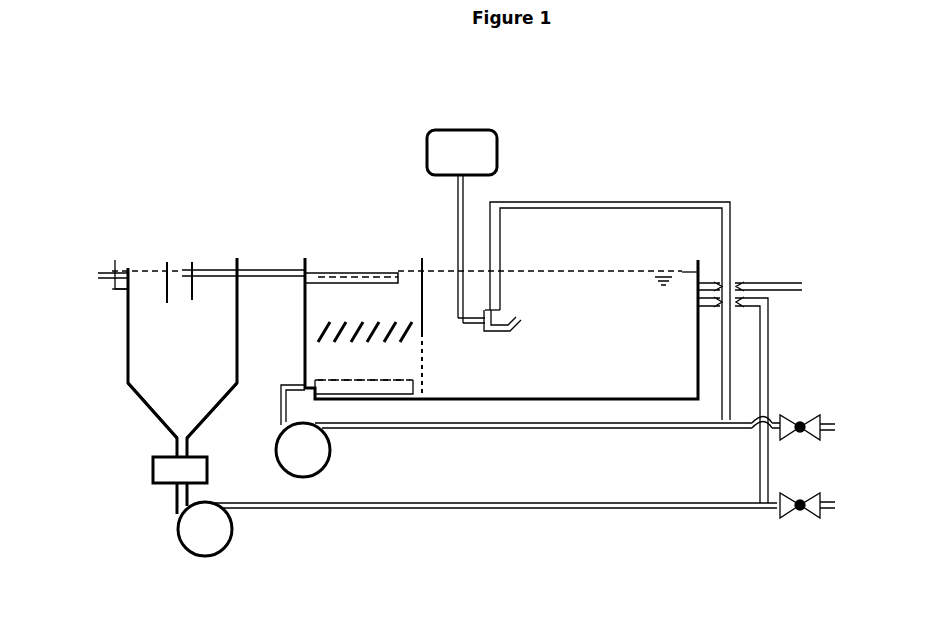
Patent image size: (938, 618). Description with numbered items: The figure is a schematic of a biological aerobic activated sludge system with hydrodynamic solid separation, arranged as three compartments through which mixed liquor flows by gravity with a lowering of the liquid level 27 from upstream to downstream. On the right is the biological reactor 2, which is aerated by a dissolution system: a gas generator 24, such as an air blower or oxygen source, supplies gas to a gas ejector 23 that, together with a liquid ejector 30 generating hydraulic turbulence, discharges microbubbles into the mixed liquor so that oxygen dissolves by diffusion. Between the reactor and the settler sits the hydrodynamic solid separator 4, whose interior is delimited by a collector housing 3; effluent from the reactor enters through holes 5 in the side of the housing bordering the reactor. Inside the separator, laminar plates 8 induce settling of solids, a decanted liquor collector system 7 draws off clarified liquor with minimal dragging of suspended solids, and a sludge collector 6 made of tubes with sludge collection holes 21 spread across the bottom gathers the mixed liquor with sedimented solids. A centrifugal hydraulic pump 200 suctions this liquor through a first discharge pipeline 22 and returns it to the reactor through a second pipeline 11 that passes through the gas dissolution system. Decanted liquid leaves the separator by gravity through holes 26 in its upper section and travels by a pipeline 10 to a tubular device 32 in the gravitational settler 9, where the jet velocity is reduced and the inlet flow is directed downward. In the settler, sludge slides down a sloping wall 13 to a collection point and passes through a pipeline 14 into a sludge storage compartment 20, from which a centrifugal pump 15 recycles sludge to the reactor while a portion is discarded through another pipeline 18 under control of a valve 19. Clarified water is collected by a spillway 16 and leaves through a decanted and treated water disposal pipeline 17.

The biological reactor 2 is at (618, 288).
The collector housing 3 is at (433, 322).
The hydrodynamic solid separator 4 is at (398, 273).
The holes 5 is at (423, 330).
The sludge collector 6 is at (388, 392).
The decanted liquor collector system 7 is at (305, 272).
The laminar plates 8 is at (342, 343).
The gravitational settler 9 is at (168, 315).
The pipeline 10 is at (253, 273).
The pipeline 11 is at (668, 203).
The sloping wall 13 is at (143, 408).
The pipeline 14 is at (167, 455).
The centrifugal pump 15 is at (208, 528).
The spillway 16 is at (112, 292).
The decanted and treated water disposal pipeline 17 is at (113, 280).
The pipeline 18 is at (820, 503).
The valve 19 is at (790, 498).
The sludge storage compartment 20 is at (165, 473).
The sludge collection holes 21 is at (400, 385).
The pipeline for the discharge of sedimented solids containing liquid 22 is at (280, 422).
The gas ejector 23 is at (517, 320).
The gas generator 24 is at (497, 145).
The holes 26 is at (333, 275).
The liquid level 27 is at (183, 276).
The liquid ejector 30 is at (512, 312).
The tubular device 32 is at (175, 271).
The centrifugal hydraulic pump 200 is at (310, 460).